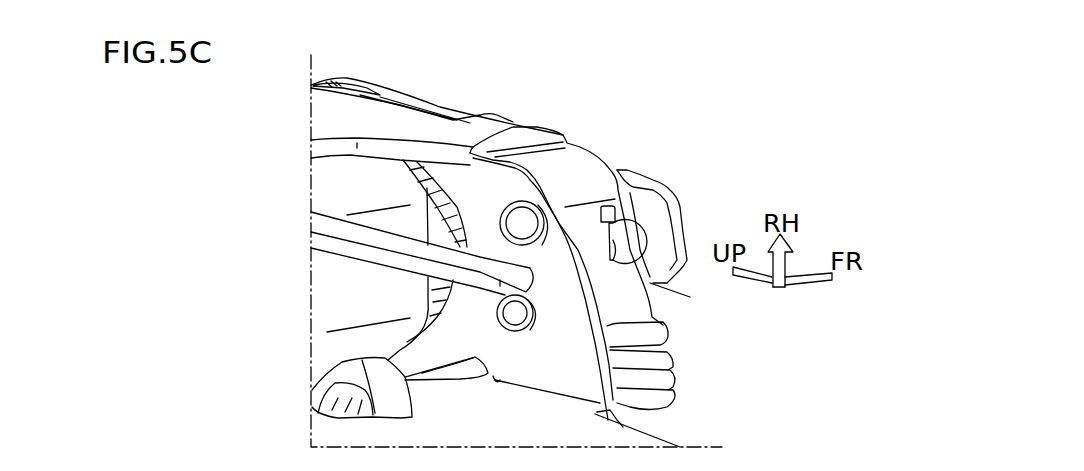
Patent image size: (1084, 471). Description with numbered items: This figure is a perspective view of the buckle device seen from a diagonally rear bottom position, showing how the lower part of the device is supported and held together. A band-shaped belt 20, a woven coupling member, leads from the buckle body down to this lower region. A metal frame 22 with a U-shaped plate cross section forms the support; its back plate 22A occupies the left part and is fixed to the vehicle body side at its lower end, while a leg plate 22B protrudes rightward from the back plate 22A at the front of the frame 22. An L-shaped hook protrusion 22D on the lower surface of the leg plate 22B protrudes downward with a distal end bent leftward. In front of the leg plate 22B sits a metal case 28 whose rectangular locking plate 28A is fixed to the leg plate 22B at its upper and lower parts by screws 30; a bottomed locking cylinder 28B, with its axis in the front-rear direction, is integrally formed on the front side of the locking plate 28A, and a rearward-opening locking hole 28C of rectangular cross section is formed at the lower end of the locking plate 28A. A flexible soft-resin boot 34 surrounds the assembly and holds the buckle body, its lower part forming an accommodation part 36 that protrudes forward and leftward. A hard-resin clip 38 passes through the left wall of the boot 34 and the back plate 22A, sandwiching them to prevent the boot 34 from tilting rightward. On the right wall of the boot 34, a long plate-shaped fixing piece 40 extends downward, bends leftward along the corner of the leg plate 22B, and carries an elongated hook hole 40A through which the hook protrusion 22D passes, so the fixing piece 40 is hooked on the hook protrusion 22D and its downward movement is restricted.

The belt 20 is at (402, 338).
The frame 22 is at (657, 432).
The back plate 22A is at (680, 447).
The leg plate 22B is at (467, 180).
The hook protrusion 22D is at (648, 243).
The case 28 is at (385, 88).
The locking plate 28A is at (660, 180).
The locking cylinder 28B is at (490, 117).
The locking hole 28C is at (655, 287).
The screws 30 is at (503, 347).
The boot 34 is at (332, 82).
The accommodation part 36 is at (390, 100).
The clip 38 is at (408, 397).
The fixing piece 40 is at (600, 402).
The hook hole 40A is at (611, 258).